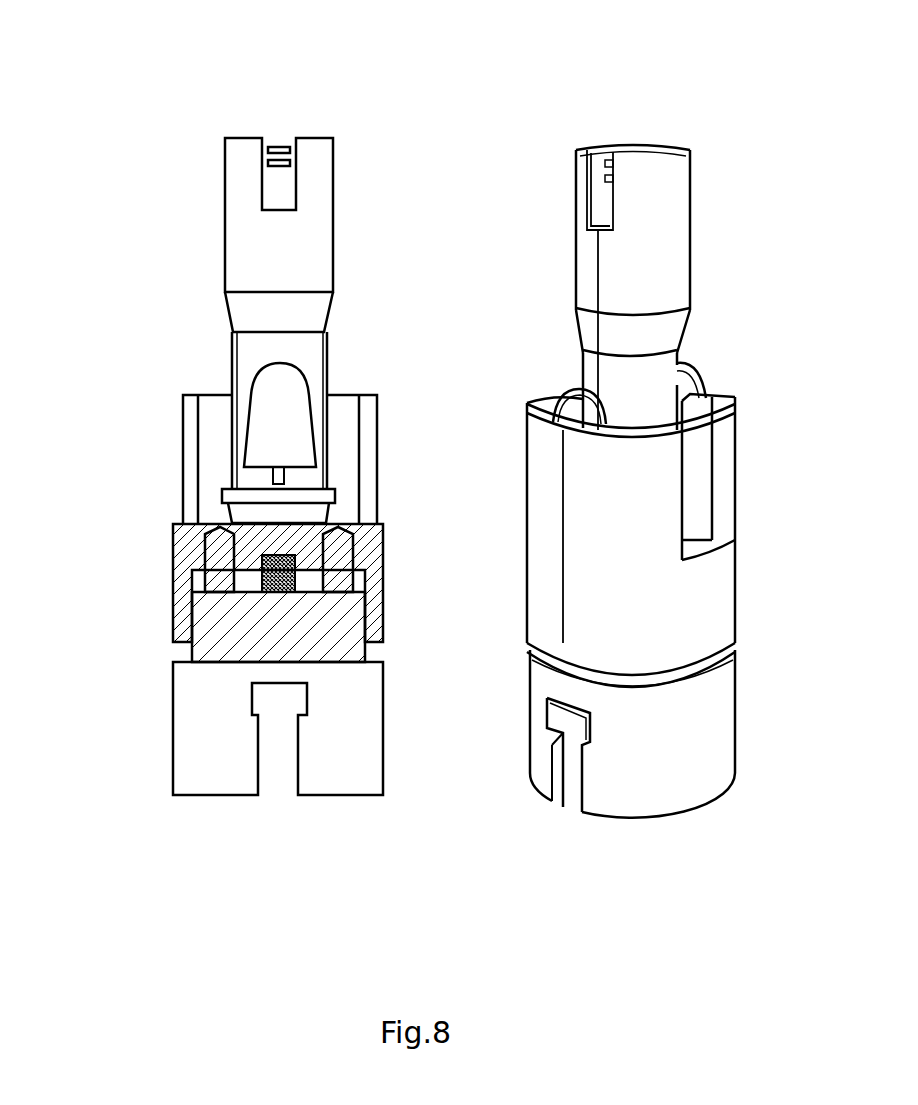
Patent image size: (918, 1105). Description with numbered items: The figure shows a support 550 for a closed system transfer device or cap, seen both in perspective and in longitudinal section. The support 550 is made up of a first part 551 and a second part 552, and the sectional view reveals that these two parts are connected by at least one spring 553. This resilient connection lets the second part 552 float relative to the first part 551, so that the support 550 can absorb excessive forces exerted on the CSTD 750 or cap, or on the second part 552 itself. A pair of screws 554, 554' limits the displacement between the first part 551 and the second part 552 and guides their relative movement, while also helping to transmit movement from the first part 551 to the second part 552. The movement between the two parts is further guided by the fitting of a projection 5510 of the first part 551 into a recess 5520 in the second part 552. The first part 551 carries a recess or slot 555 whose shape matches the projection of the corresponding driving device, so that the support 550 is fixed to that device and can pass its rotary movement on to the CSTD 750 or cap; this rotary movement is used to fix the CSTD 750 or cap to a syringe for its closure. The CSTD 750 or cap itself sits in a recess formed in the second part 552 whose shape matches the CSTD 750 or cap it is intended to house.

The closed system transfer device (CSTD) 750 is at (318, 187).
The second part 552 is at (190, 448).
The recess 5520 is at (200, 581).
The spring 553 is at (296, 575).
The screw 554 is at (151, 559).
The screw 554' is at (397, 559).
The projection 5510 is at (192, 650).
The first part 551 is at (190, 735).
The recess or slot 555 is at (295, 770).
The support 550 is at (210, 846).